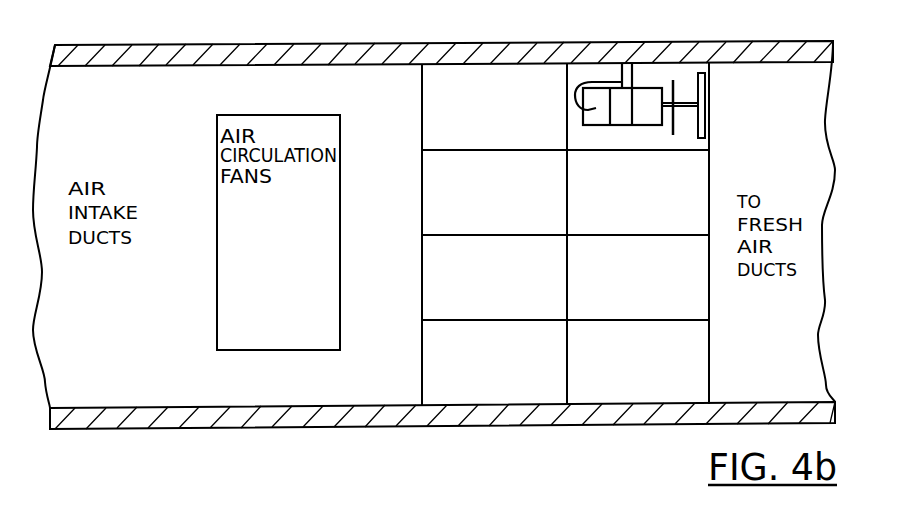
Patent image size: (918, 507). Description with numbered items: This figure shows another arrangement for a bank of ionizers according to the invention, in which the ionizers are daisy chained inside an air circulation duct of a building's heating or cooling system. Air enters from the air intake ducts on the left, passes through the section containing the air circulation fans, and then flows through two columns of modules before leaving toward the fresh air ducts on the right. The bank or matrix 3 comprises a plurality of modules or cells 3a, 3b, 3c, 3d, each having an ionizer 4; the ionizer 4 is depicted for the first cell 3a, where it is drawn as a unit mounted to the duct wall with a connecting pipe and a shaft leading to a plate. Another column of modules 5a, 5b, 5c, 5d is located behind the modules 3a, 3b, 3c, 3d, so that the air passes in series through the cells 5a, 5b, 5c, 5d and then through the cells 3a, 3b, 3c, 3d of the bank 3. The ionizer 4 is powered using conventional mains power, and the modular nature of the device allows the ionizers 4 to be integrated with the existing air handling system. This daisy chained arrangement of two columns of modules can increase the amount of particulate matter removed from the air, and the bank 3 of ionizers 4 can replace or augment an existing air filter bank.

The bank or matrix 3 is at (712, 155).
The cell 3a is at (613, 140).
The cell 3b is at (654, 220).
The cell 3c is at (654, 306).
The cell 3d is at (654, 392).
The ionizer 4 is at (580, 110).
The module 5a is at (494, 143).
The module 5b is at (494, 220).
The module 5c is at (494, 306).
The module 5d is at (494, 392).